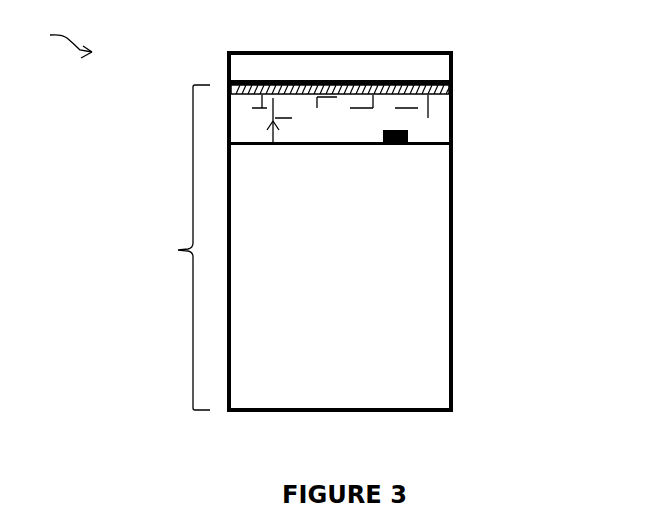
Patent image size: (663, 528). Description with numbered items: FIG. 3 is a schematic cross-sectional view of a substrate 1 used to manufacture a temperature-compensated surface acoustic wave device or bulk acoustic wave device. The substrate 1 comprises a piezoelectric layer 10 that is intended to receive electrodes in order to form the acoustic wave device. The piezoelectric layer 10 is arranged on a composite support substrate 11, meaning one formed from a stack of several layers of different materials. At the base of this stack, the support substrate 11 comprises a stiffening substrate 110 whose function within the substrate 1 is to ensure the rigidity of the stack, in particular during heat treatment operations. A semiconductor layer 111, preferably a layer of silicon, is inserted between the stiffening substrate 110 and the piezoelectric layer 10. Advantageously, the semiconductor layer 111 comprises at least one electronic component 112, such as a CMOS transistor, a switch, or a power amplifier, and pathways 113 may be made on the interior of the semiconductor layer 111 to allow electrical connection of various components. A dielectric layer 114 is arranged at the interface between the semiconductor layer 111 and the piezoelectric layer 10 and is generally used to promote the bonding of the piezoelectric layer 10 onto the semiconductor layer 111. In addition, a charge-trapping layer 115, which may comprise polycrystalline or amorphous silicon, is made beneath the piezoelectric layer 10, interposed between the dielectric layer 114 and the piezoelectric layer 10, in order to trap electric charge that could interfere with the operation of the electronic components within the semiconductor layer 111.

The substrate 1 is at (61, 40).
The piezoelectric layer 10 is at (453, 65).
The composite support substrate 11 is at (161, 247).
The stiffening substrate 110 is at (453, 241).
The semiconductor layer 111 is at (453, 107).
The electronic component 112 is at (408, 132).
The pathways 113 is at (273, 142).
The dielectric layer 114 is at (453, 94).
The charge-trapping layer 115 is at (453, 85).